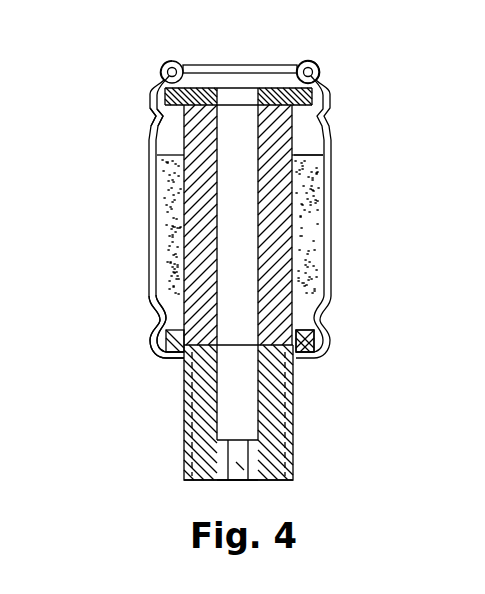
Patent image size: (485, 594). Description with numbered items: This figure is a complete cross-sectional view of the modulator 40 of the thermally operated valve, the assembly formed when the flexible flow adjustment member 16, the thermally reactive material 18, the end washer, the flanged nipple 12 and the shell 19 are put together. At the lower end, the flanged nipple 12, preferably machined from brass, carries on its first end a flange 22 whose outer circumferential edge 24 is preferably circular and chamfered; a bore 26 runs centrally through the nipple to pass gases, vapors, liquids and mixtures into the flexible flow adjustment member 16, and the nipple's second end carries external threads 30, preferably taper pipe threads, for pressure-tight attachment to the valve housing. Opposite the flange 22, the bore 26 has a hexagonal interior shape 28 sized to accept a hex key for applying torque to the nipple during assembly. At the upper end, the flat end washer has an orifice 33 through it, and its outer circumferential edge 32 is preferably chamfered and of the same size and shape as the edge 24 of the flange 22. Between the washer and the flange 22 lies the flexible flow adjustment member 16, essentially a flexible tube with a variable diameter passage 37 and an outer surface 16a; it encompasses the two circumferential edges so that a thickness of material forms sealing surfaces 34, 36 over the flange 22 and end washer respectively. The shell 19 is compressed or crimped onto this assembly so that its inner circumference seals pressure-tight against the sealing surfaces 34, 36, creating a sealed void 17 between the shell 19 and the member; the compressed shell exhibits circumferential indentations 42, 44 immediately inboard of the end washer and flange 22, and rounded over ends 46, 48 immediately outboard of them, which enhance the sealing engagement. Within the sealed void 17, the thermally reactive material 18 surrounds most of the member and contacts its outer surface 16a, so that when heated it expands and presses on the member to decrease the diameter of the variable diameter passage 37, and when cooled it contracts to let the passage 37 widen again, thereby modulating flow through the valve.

The modulator 40 is at (150, 72).
The rounded over end 46 is at (320, 72).
The sealing surface 36 is at (330, 92).
The outer circumferential edge 32 is at (323, 113).
The orifice 33 is at (324, 126).
The variable diameter passage 37 is at (233, 190).
The circumferential indentation 42 is at (152, 125).
The sealed void 17 is at (153, 148).
The shell 19 is at (328, 166).
The thermally reactive material 18 is at (328, 194).
The flexible flow adjustment member 16 is at (287, 243).
The outer surface 16a is at (320, 280).
The circumferential indentation 44 is at (152, 312).
The sealing surface 34 is at (152, 336).
The flange 22 is at (152, 358).
The outer circumferential edge 24 is at (330, 345).
The rounded over end 48 is at (320, 360).
The flanged nipple 12 is at (275, 431).
The bore 26 is at (222, 406).
The external threads 30 is at (183, 457).
The hexagonal interior shape 28 is at (292, 484).